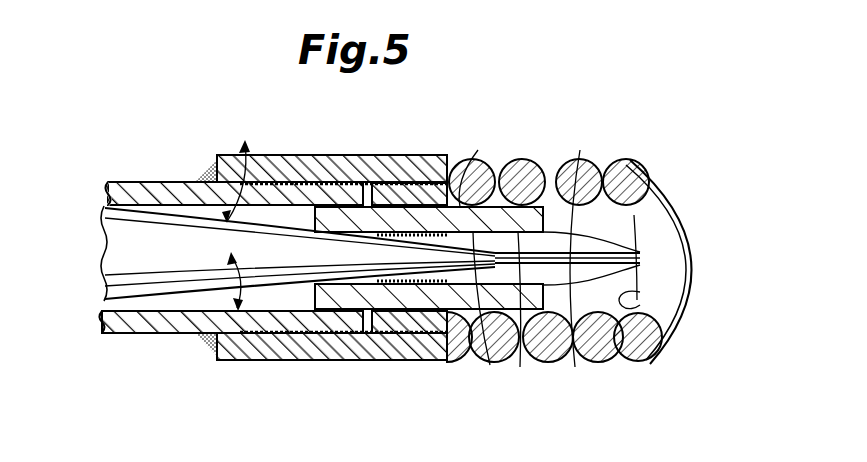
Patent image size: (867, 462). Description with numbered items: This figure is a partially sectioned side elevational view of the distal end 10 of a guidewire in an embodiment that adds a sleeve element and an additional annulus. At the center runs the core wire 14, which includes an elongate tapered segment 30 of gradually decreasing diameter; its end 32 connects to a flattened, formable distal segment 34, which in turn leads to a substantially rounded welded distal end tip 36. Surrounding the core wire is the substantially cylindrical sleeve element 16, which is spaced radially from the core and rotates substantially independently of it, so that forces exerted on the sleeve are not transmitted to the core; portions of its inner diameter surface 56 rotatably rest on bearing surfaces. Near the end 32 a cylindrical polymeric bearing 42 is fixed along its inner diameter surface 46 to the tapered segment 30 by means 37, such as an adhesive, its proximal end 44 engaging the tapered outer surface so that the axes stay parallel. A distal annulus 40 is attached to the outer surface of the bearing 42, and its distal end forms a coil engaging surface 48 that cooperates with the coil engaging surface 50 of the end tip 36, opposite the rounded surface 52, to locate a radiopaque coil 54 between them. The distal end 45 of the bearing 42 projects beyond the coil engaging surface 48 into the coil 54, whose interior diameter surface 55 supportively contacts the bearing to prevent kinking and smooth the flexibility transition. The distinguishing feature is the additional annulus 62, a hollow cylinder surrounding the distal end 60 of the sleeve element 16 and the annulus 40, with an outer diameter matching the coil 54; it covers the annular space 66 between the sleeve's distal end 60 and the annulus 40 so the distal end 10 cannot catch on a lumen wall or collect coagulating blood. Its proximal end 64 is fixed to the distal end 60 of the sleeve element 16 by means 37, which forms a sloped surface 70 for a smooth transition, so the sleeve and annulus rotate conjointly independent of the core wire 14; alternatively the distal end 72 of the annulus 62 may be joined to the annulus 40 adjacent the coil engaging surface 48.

The distal end 10 is at (606, 145).
The core wire 14 is at (100, 276).
The sleeve element 16 is at (138, 192).
The tapered segment 30 is at (179, 265).
The end of tapered segment 32 is at (490, 362).
The formable distal segment 34 is at (672, 243).
The distal end tip 36 is at (690, 228).
The attachment means 37 is at (343, 167).
The distal annulus 40 is at (410, 190).
The bearing 42 is at (522, 360).
The proximal end of bearing 44 is at (295, 352).
The distal end of bearing 45 is at (580, 360).
The inner diameter surface of bearing 46 is at (675, 270).
The coil engaging surface 48 is at (473, 163).
The coil engaging surface of end tip 50 is at (640, 295).
The rounded surface 52 is at (657, 182).
The coil 54 is at (648, 355).
The interior diameter surface of coil 55 is at (582, 135).
The inner diameter surface of sleeve element 56 is at (180, 203).
The distal end of sleeve element 60 is at (395, 358).
The additional annulus 62 is at (360, 353).
The proximal end of annulus 64 is at (208, 360).
The annular space 66 is at (457, 353).
The sloped surface 70 is at (202, 343).
The distal end of annulus 72 is at (447, 183).